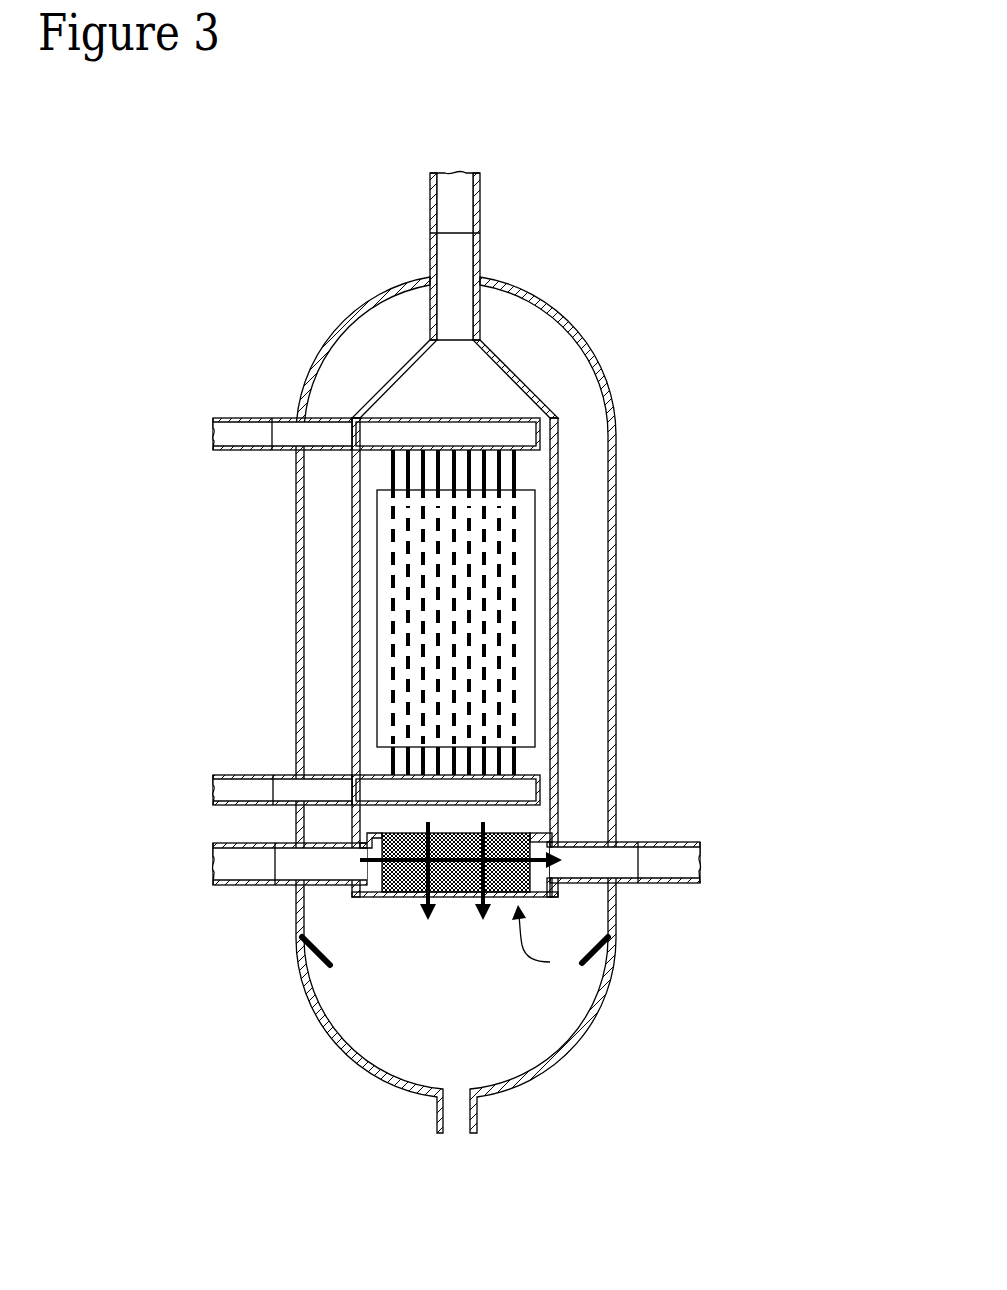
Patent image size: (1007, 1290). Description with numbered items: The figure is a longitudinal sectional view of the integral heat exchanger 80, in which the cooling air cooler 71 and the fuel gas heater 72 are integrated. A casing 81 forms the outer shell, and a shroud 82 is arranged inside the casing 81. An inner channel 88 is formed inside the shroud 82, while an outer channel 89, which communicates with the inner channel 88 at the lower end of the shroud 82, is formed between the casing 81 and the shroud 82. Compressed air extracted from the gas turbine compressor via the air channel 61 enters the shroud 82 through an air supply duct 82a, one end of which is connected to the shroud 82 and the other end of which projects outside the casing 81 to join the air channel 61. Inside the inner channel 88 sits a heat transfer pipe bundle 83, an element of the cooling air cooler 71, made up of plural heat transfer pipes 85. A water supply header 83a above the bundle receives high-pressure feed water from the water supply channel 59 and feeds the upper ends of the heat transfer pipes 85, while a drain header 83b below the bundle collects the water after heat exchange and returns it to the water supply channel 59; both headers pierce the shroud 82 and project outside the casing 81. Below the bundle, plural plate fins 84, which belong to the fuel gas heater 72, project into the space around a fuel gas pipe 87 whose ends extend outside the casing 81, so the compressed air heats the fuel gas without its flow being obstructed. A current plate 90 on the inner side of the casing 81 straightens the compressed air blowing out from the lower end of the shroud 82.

The integral heat exchanger 80 is at (655, 238).
The casing 81 is at (354, 308).
The air channel 61 is at (432, 205).
The air supply duct 82a is at (480, 265).
The shroud 82 is at (510, 363).
The water supply header 83a is at (467, 417).
The drain header 83b is at (510, 812).
The heat transfer pipe bundle 83 is at (517, 543).
The heat transfer pipes 85 is at (423, 548).
The cooling air cooler 71 is at (540, 597).
The inner channel 88 is at (412, 372).
The outer channel 89 is at (310, 716).
The water supply channel 59 is at (255, 418).
The fuel gas pipe 87 is at (245, 887).
The plate fins 84 is at (417, 895).
The fuel gas heater 72 is at (610, 945).
The current plate 90 is at (606, 940).